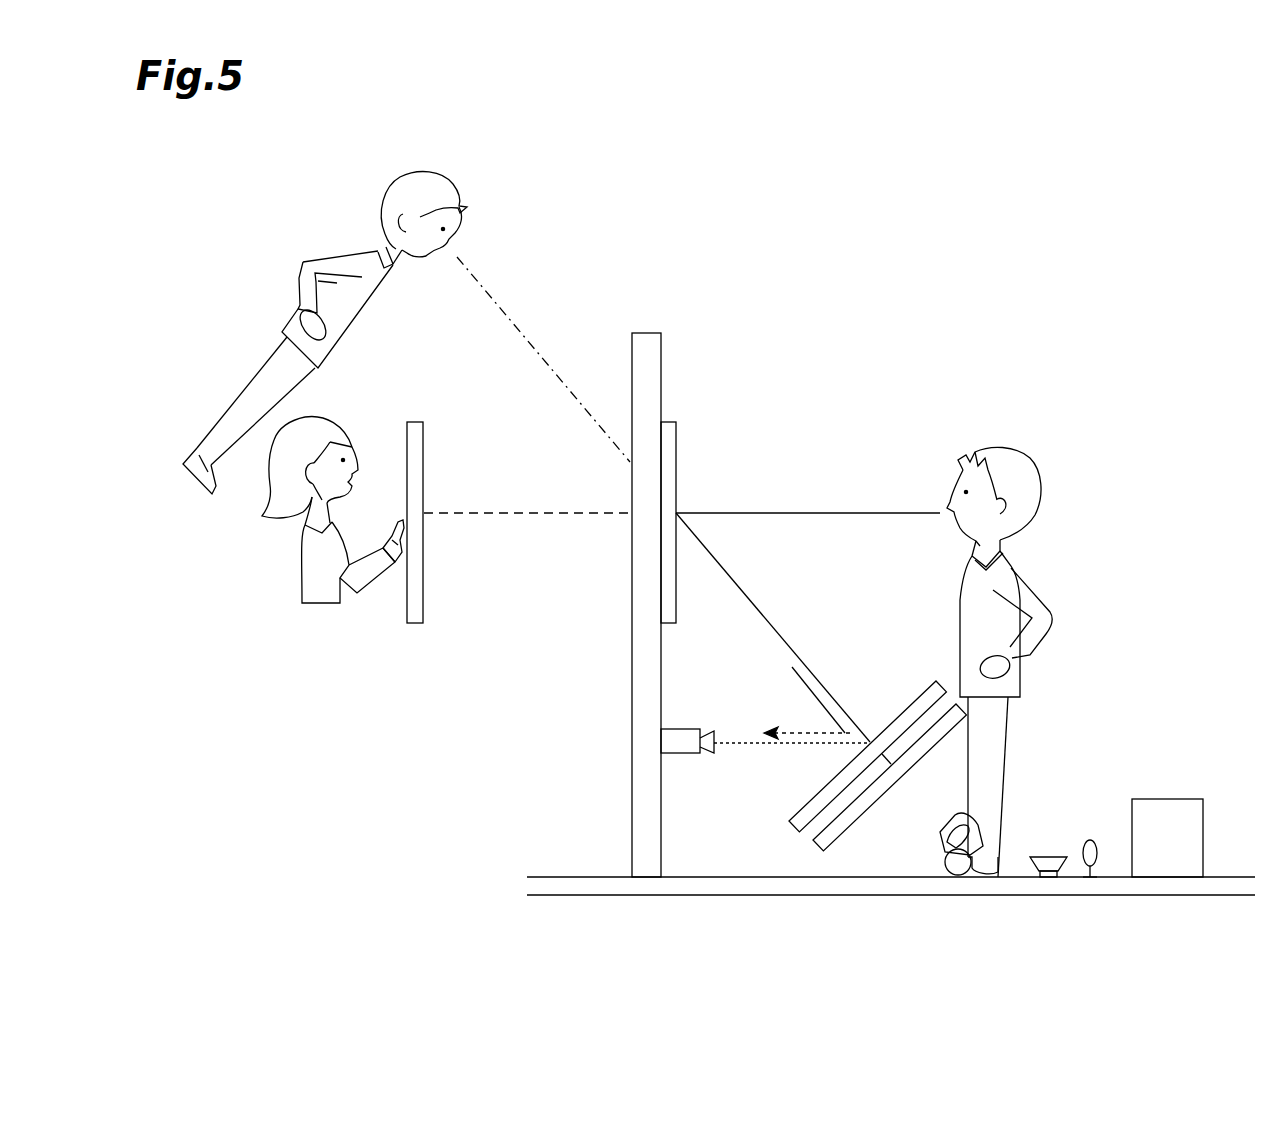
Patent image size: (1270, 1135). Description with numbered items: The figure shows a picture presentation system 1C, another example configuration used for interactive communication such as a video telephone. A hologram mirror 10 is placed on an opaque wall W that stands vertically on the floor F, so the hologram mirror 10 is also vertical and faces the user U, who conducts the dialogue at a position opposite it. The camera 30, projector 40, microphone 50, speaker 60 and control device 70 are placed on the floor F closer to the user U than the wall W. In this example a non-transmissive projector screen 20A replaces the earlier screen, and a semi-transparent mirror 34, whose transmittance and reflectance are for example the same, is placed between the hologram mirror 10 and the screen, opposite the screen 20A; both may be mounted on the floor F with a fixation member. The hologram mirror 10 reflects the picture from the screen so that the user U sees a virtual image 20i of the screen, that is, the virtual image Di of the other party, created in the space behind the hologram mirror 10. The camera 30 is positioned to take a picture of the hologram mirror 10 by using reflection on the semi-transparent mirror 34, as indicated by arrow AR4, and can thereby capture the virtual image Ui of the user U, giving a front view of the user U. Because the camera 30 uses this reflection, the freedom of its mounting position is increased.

The picture presentation system 1C is at (1053, 226).
The wall W is at (661, 352).
The hologram mirror 10 is at (676, 446).
The virtual image of the screen 20i is at (423, 446).
The screen 20A is at (915, 762).
The camera 30 is at (684, 728).
The semi-transparent mirror 34 is at (924, 690).
The projector 40 is at (926, 864).
The microphone 50 is at (1092, 840).
The speaker 60 is at (1053, 855).
The control device 70 is at (1203, 822).
The arrow AR4 is at (801, 719).
The floor F is at (767, 898).
The user U is at (1041, 442).
The virtual image of the user Ui is at (358, 182).
The virtual image of the other party Di is at (358, 418).